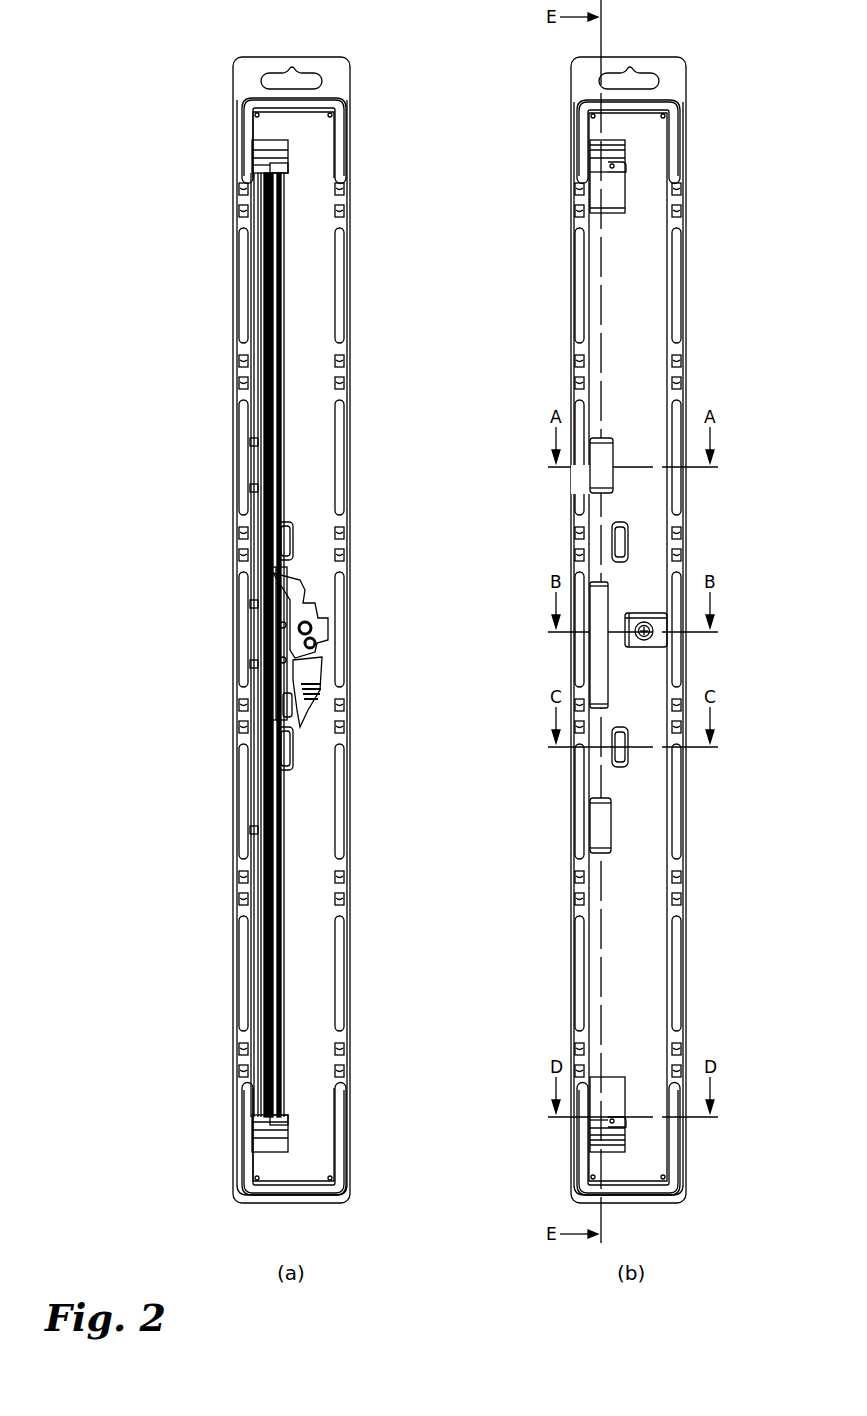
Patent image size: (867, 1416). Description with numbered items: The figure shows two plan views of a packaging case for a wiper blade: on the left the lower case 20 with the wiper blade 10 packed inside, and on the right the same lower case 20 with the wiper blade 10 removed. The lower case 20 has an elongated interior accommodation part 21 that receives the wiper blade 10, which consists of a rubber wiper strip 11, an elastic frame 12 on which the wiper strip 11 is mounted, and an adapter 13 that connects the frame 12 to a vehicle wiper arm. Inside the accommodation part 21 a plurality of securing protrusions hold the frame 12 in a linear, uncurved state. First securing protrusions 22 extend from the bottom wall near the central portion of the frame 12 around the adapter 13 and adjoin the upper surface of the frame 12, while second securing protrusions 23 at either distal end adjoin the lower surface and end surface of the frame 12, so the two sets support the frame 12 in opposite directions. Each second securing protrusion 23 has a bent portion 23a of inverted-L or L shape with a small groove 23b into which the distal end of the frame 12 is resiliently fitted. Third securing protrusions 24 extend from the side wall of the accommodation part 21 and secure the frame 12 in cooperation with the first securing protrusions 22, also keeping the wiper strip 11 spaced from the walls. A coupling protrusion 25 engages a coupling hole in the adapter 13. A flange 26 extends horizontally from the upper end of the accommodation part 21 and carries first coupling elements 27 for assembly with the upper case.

The wiper blade 10 is at (291, 645).
The wiper strip 11 is at (258, 375).
The frame 12 is at (283, 980).
The adapter 13 is at (312, 605).
The lower case 20 is at (372, 892).
The accommodation part 21 is at (305, 1050).
The first securing protrusions 22 is at (293, 540).
The second securing protrusions 23 is at (468, 646).
The bent portion 23a is at (627, 177).
The groove 23b is at (612, 148).
The third securing protrusions 24 is at (255, 468).
The coupling protrusion 25 is at (312, 629).
The flange 26 is at (344, 197).
The first coupling element 27 is at (340, 290).